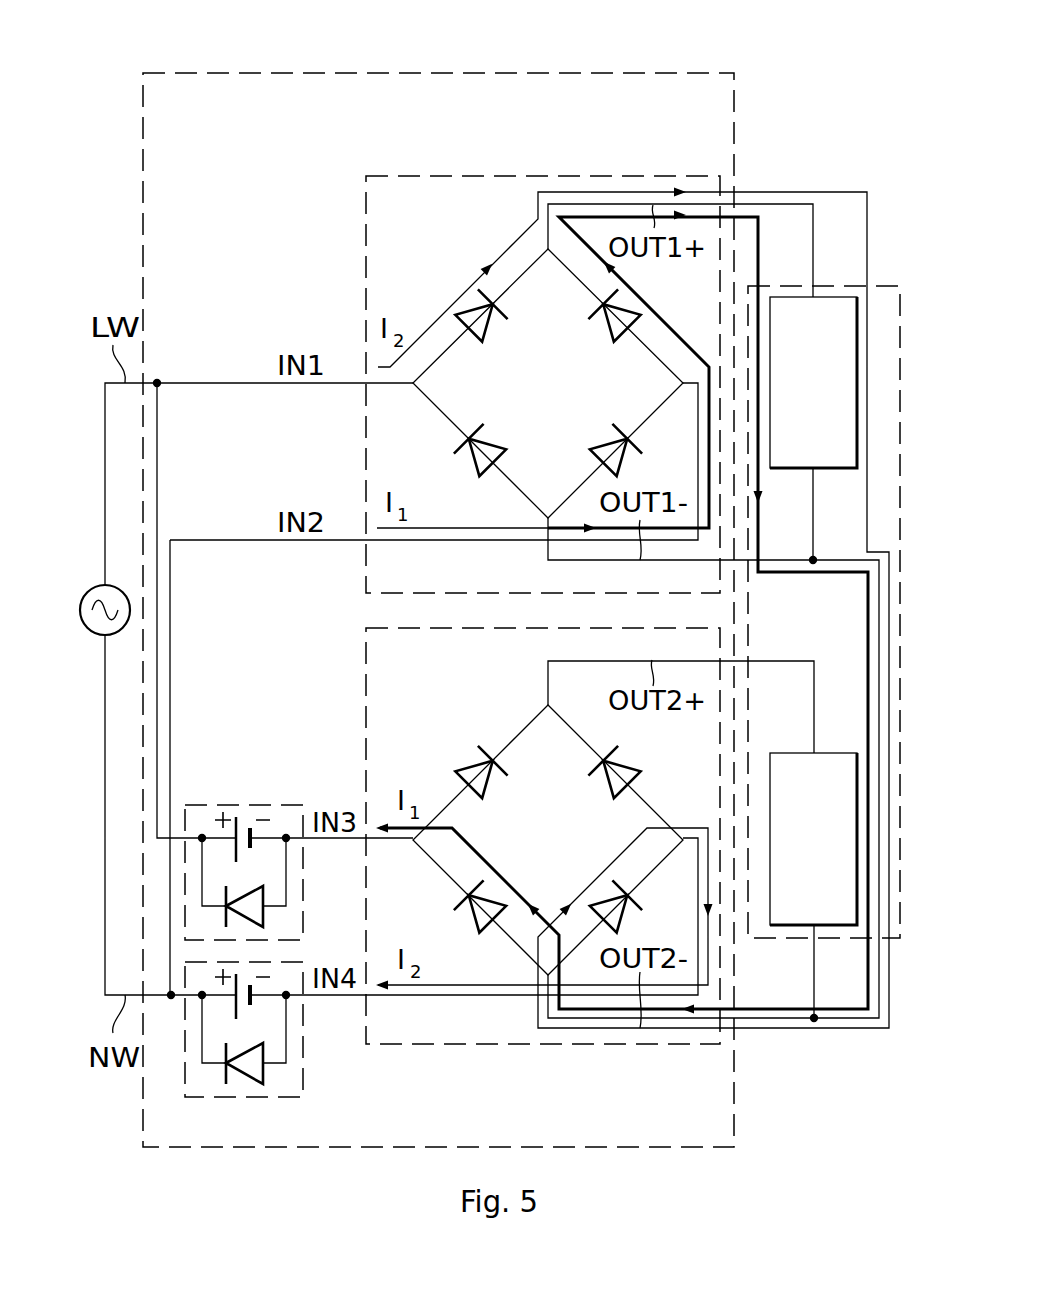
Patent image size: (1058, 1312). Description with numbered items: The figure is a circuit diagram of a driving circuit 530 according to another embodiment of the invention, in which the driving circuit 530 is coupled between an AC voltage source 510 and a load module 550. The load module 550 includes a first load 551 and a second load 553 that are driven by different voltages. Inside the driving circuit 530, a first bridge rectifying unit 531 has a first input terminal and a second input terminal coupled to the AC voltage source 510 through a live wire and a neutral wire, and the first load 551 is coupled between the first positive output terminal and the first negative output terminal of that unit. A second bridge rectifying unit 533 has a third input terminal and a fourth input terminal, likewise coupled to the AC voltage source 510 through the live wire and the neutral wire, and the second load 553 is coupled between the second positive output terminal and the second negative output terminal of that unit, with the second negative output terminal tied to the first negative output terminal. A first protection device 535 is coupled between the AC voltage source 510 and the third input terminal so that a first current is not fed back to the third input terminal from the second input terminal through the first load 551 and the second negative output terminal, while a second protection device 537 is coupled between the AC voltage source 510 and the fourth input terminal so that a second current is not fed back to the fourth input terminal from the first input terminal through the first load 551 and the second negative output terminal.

The AC voltage source 510 is at (130, 610).
The driving circuit 530 is at (438, 73).
The first bridge rectifying unit 531 is at (541, 176).
The second bridge rectifying unit 533 is at (544, 1044).
The first protection device 535 is at (185, 805).
The second protection device 537 is at (185, 1097).
The load module 550 is at (893, 286).
The first load 551 is at (783, 297).
The second load 553 is at (772, 753).